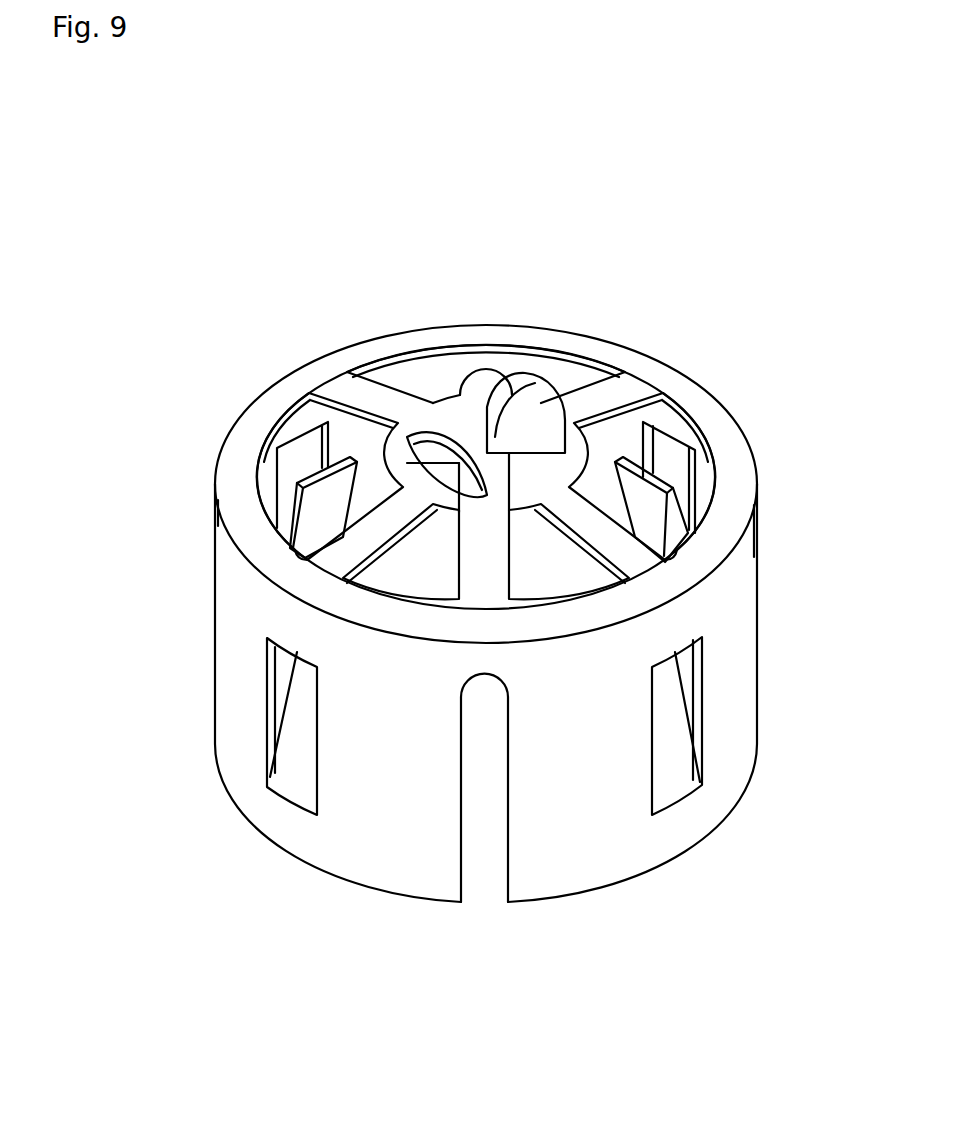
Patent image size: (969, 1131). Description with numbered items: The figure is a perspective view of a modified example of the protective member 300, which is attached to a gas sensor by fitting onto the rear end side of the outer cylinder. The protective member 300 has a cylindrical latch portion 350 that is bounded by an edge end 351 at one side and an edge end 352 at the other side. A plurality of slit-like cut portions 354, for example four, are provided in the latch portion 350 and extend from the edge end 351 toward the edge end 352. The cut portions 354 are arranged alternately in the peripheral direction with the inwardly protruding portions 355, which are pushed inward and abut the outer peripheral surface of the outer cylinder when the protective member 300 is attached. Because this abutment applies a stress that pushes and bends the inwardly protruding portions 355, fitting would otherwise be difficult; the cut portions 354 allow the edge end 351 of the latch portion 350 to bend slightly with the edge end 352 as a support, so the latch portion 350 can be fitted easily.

The protective member 300 is at (722, 198).
The latch portion 350 is at (238, 668).
The edge end 351 is at (767, 760).
The edge end 352 is at (768, 472).
The cut portion 354 is at (502, 556).
The inwardly protruding portion 355 is at (325, 508).